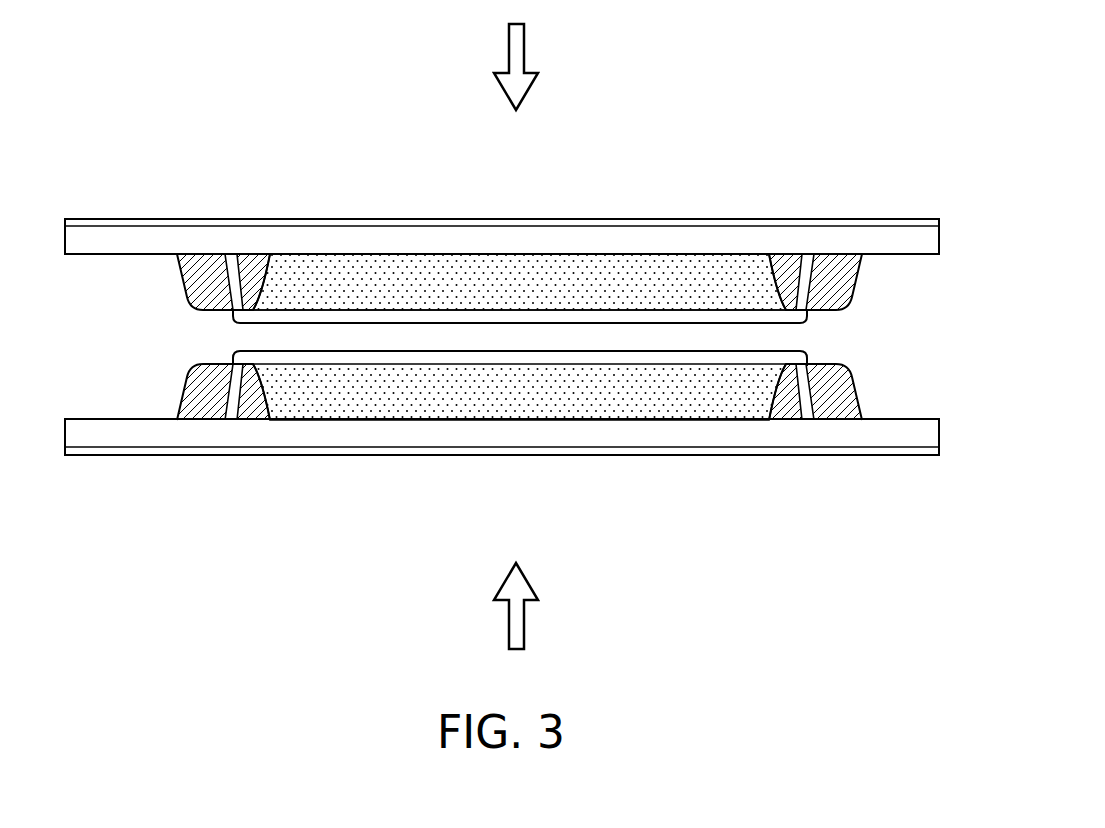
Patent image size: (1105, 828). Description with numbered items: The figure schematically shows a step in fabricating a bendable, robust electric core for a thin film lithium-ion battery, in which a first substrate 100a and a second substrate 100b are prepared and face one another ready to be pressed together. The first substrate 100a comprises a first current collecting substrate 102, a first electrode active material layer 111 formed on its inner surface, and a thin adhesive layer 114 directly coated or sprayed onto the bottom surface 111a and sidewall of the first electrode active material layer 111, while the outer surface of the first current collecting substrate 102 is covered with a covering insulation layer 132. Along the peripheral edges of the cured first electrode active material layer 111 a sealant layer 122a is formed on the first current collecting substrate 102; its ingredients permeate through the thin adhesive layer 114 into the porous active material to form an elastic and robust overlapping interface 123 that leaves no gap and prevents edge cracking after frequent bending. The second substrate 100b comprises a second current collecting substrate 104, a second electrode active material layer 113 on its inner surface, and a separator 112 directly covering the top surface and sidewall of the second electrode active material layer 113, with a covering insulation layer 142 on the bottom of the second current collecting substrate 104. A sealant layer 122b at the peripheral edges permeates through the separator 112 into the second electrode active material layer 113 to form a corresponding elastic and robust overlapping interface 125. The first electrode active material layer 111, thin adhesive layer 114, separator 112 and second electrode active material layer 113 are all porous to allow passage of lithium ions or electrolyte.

The first substrate 100a is at (1012, 202).
The second substrate 100b is at (1013, 470).
The first current collecting substrate 102 is at (926, 241).
The second current collecting substrate 104 is at (926, 432).
The first electrode active material layer 111 is at (512, 280).
The bottom surface of the first electrode active material layer 111a is at (392, 300).
The separator 112 is at (650, 355).
The second electrode active material layer 113 is at (512, 395).
The thin adhesive layer 114 is at (605, 318).
The sealant layer 122a is at (197, 290).
The sealant layer 122b is at (207, 392).
The elastic and robust overlapping interface 123 is at (253, 254).
The elastic and robust overlapping interface 125 is at (253, 420).
The covering insulation layer 132 is at (893, 219).
The covering insulation layer 142 is at (893, 455).